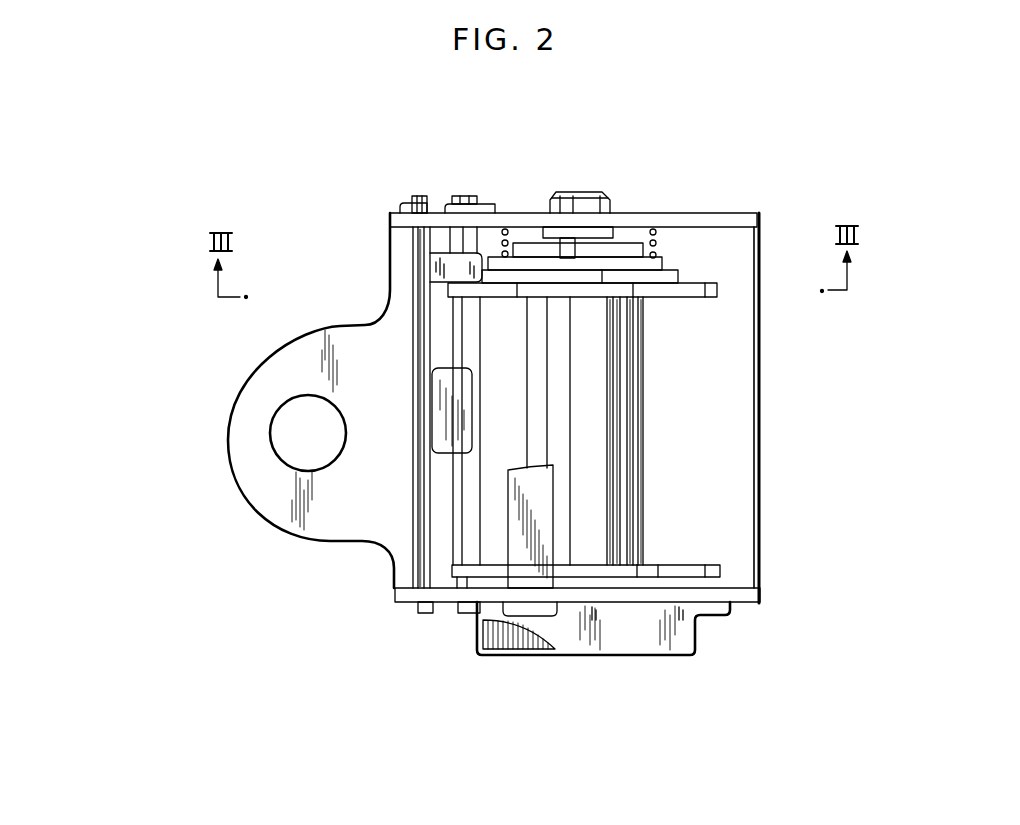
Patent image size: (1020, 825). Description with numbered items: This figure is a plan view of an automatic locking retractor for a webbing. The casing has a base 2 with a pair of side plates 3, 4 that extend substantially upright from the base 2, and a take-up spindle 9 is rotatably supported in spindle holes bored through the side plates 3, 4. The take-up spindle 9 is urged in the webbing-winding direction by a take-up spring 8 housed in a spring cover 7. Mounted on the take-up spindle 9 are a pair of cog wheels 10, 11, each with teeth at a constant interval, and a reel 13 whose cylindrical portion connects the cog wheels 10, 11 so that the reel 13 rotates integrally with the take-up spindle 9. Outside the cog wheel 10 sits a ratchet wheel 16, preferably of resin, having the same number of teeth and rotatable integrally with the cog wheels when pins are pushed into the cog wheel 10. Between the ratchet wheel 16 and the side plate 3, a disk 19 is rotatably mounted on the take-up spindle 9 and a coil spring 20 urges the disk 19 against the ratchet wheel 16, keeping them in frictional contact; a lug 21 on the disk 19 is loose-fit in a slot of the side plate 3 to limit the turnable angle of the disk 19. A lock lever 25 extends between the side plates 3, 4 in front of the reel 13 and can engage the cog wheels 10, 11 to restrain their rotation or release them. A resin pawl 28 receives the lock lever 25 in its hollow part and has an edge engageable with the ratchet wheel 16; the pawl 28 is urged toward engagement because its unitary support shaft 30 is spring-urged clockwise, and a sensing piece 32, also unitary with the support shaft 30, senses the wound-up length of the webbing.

The base 2 is at (352, 510).
The side plate 3 is at (745, 212).
The side plate 4 is at (757, 605).
The spring cover 7 is at (615, 635).
The take-up spring 8 is at (508, 640).
The take-up spindle 9 is at (572, 192).
The cog wheel 10 is at (695, 287).
The cog wheel 11 is at (697, 572).
The reel 13 is at (648, 402).
The ratchet wheel 16 is at (667, 277).
The disk 19 is at (628, 263).
The coil spring 20 is at (503, 228).
The lug 21 is at (563, 238).
The lock lever 25 is at (470, 518).
The pawl 28 is at (443, 265).
The support shaft 30 is at (418, 302).
The sensing piece 32 is at (448, 428).